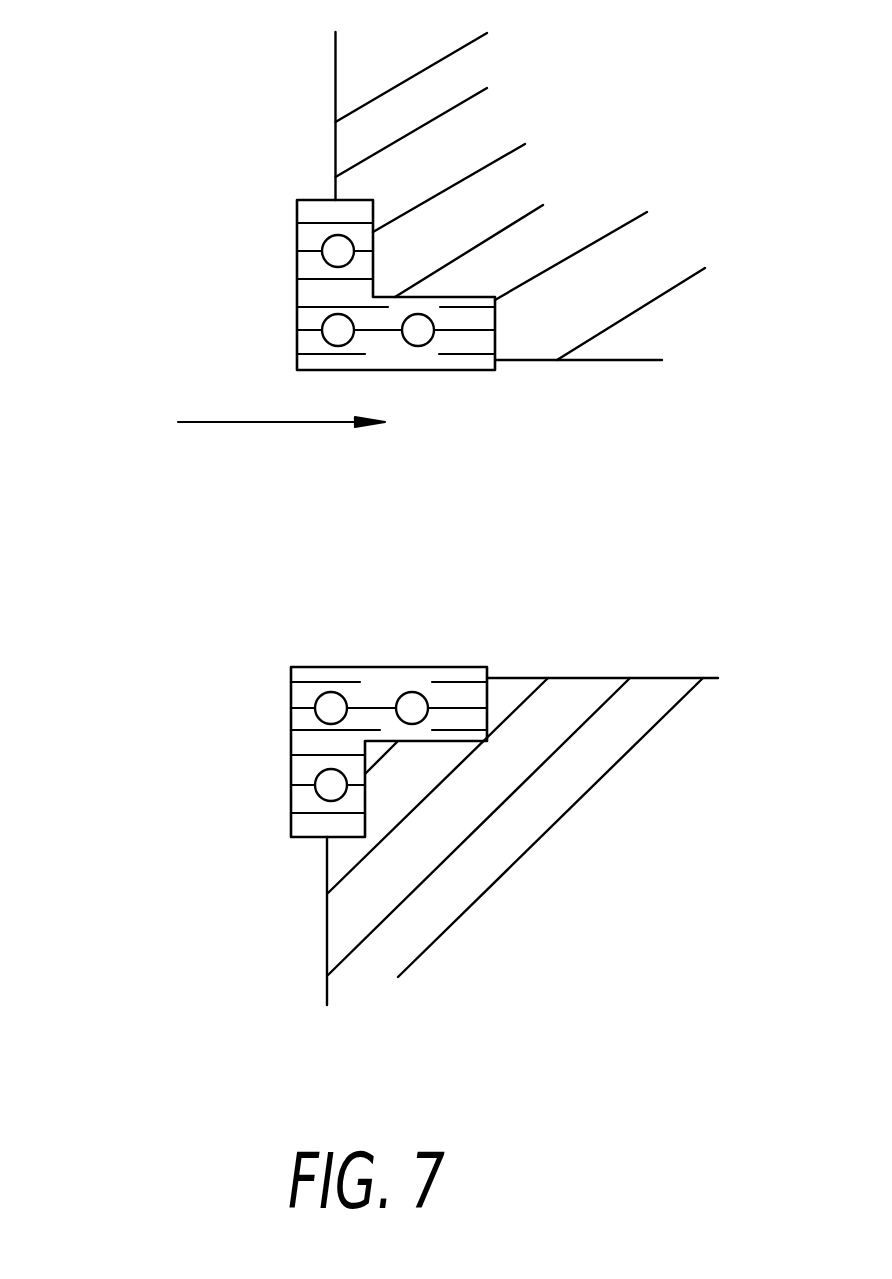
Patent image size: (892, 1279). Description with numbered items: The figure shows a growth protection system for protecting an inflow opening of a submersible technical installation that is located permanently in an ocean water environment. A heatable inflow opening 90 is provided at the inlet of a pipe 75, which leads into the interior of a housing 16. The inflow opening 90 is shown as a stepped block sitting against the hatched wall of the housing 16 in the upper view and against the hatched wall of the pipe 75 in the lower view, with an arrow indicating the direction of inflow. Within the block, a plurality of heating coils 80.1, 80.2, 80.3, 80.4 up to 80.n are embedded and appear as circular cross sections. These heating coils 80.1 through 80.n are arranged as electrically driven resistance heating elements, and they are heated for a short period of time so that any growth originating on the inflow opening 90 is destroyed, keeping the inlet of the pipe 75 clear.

The housing 16 is at (668, 111).
The pipe 75 is at (713, 648).
The heatable inflow opening 90 is at (317, 292).
The heating coil 80.1 is at (323, 247).
The heating coil 80.2 is at (318, 790).
The heating coil 80.3 is at (412, 708).
The heating coil 80.4 is at (418, 330).
The heating coil 80.n is at (333, 708).